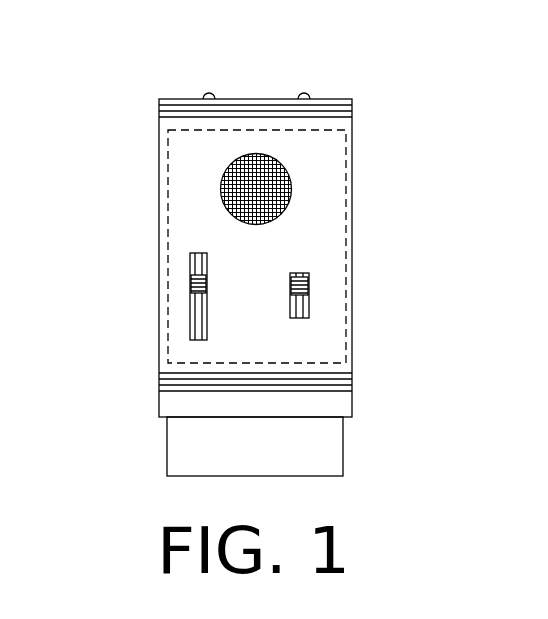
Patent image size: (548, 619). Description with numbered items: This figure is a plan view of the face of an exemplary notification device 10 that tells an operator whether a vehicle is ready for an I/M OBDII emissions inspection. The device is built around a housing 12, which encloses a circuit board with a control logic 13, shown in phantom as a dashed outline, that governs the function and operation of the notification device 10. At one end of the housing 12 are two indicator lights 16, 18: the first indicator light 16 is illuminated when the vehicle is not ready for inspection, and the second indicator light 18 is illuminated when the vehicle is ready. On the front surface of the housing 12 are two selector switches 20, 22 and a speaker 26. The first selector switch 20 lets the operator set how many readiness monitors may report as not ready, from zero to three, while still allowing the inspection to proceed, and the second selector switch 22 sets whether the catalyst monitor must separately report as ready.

The notification device 10 is at (100, 95).
The housing 12 is at (165, 419).
The control logic 13 is at (346, 166).
The first indicator light 16 is at (304, 93).
The second indicator light 18 is at (209, 93).
The first selector switch 20 is at (172, 279).
The second selector switch 22 is at (346, 302).
The speaker 26 is at (222, 174).